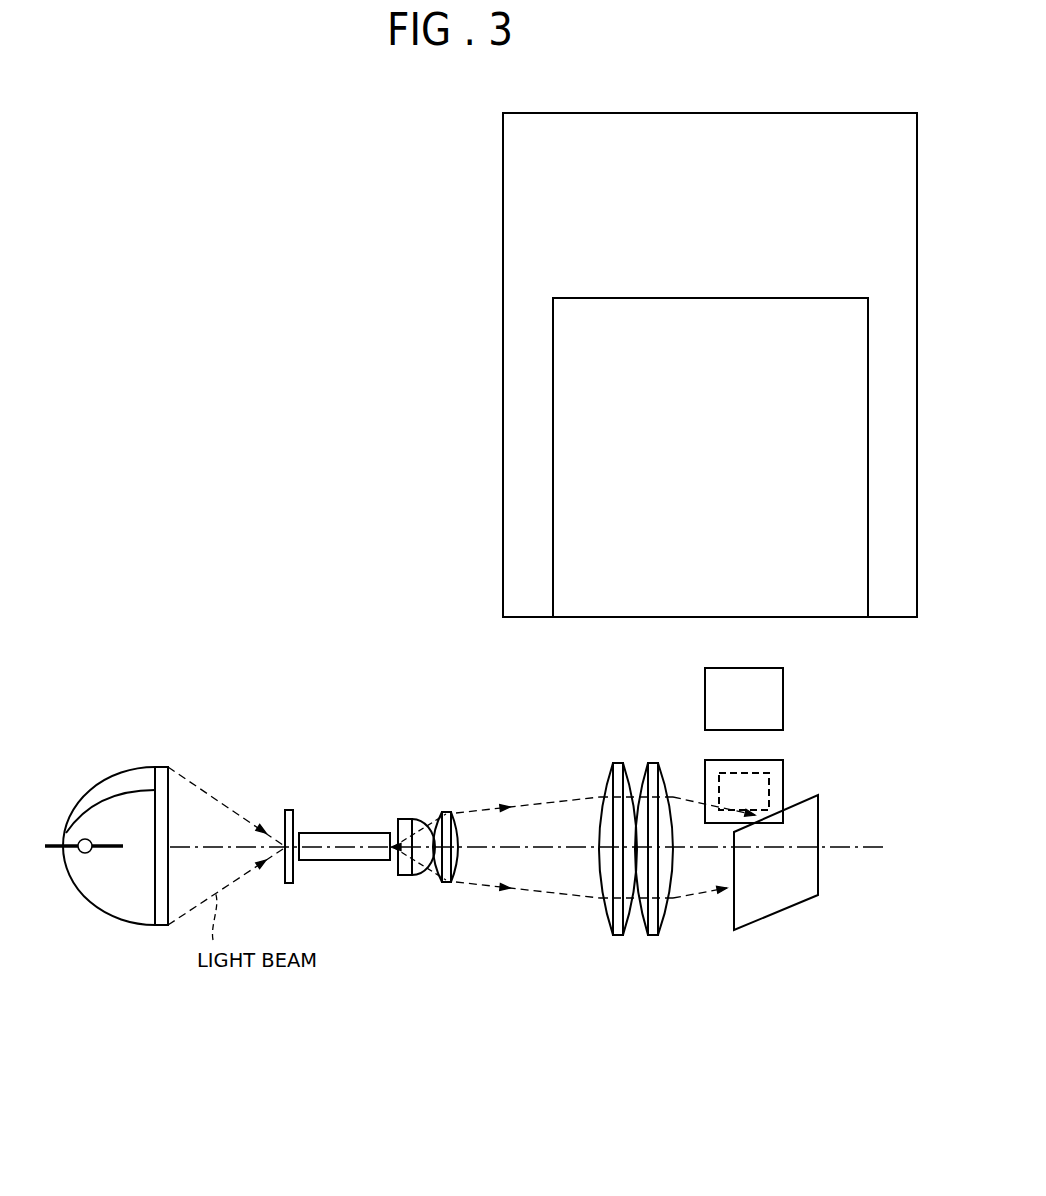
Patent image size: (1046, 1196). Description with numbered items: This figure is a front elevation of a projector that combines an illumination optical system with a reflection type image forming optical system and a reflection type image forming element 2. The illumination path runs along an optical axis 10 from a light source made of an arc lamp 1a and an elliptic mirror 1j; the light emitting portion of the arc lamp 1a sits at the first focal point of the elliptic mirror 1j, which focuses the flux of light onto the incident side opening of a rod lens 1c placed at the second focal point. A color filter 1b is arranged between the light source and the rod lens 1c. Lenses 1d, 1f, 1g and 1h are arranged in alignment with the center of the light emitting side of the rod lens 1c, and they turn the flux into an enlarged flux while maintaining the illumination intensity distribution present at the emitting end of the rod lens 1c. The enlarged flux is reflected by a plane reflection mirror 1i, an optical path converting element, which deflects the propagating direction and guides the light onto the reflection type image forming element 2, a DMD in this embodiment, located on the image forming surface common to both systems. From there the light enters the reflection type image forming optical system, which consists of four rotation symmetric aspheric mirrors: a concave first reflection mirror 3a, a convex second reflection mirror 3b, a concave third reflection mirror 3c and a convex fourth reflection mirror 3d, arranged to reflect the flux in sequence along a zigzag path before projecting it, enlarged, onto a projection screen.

The arc lamp 1a is at (103, 840).
The color filter 1b is at (289, 810).
The rod lens 1c is at (350, 828).
The lens 1d is at (405, 877).
The lens 1f is at (444, 883).
The lens 1g is at (617, 936).
The lens 1h is at (655, 936).
The plane reflection mirror 1i is at (800, 884).
The elliptic mirror 1j is at (162, 767).
The reflection type image forming element 2 is at (755, 793).
The first reflection mirror 3a is at (770, 767).
The second reflection mirror 3b is at (770, 693).
The third reflection mirror 3c is at (577, 367).
The fourth reflection mirror 3d is at (525, 247).
The optical axis 10 is at (523, 849).